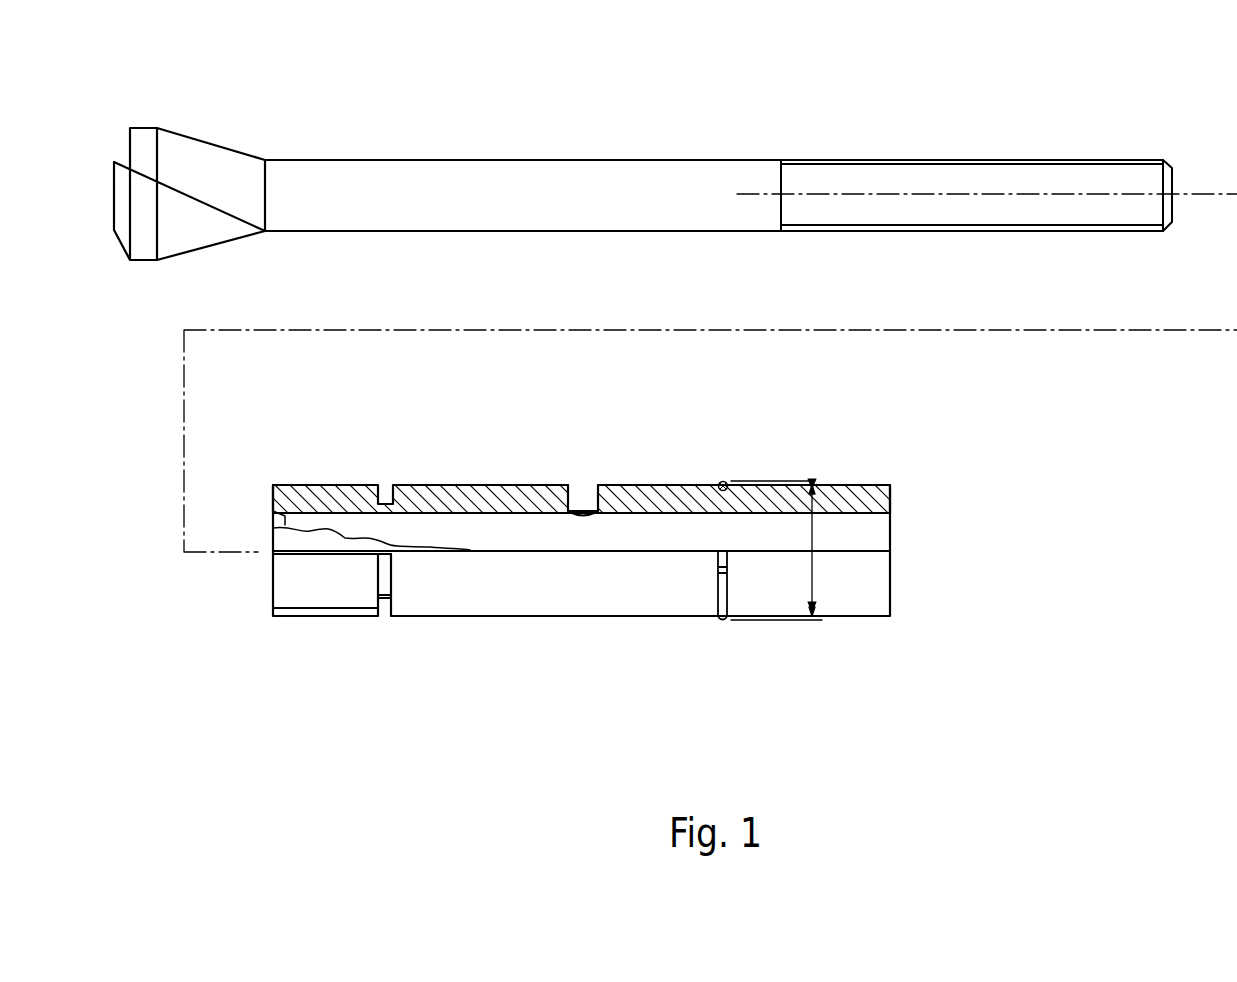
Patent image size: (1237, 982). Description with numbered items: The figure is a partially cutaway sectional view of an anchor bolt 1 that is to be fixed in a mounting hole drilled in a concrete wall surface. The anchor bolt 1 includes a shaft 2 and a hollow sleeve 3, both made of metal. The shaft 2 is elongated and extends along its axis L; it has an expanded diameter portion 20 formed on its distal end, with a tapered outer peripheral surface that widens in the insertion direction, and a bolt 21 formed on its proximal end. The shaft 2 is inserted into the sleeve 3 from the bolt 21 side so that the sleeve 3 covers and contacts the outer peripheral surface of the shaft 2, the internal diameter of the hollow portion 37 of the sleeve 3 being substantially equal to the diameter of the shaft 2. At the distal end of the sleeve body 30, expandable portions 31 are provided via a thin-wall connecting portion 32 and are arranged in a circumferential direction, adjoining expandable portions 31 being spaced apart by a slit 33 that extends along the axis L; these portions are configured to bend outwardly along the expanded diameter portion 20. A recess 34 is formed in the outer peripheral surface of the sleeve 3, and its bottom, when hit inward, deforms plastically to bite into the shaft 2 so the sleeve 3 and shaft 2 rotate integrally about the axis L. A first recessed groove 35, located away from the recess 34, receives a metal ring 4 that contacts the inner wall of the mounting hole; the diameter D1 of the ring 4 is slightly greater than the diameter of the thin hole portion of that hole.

The anchor bolt 1 is at (1025, 405).
The shaft 2 is at (540, 168).
The expanded diameter portion 20 is at (217, 155).
The bolt 21 is at (1055, 178).
The axis L is at (840, 193).
The hollow sleeve 3 is at (575, 563).
The sleeve body 30 is at (433, 607).
The expandable portions 31 is at (322, 597).
The thin-wall connecting portion 32 is at (385, 580).
The slit 33 is at (322, 548).
The recess 34 is at (583, 498).
The first recessed groove 35 is at (719, 593).
The hollow portion 37 is at (493, 521).
The ring 4 is at (722, 480).
The diameter of the ring D1 is at (790, 550).